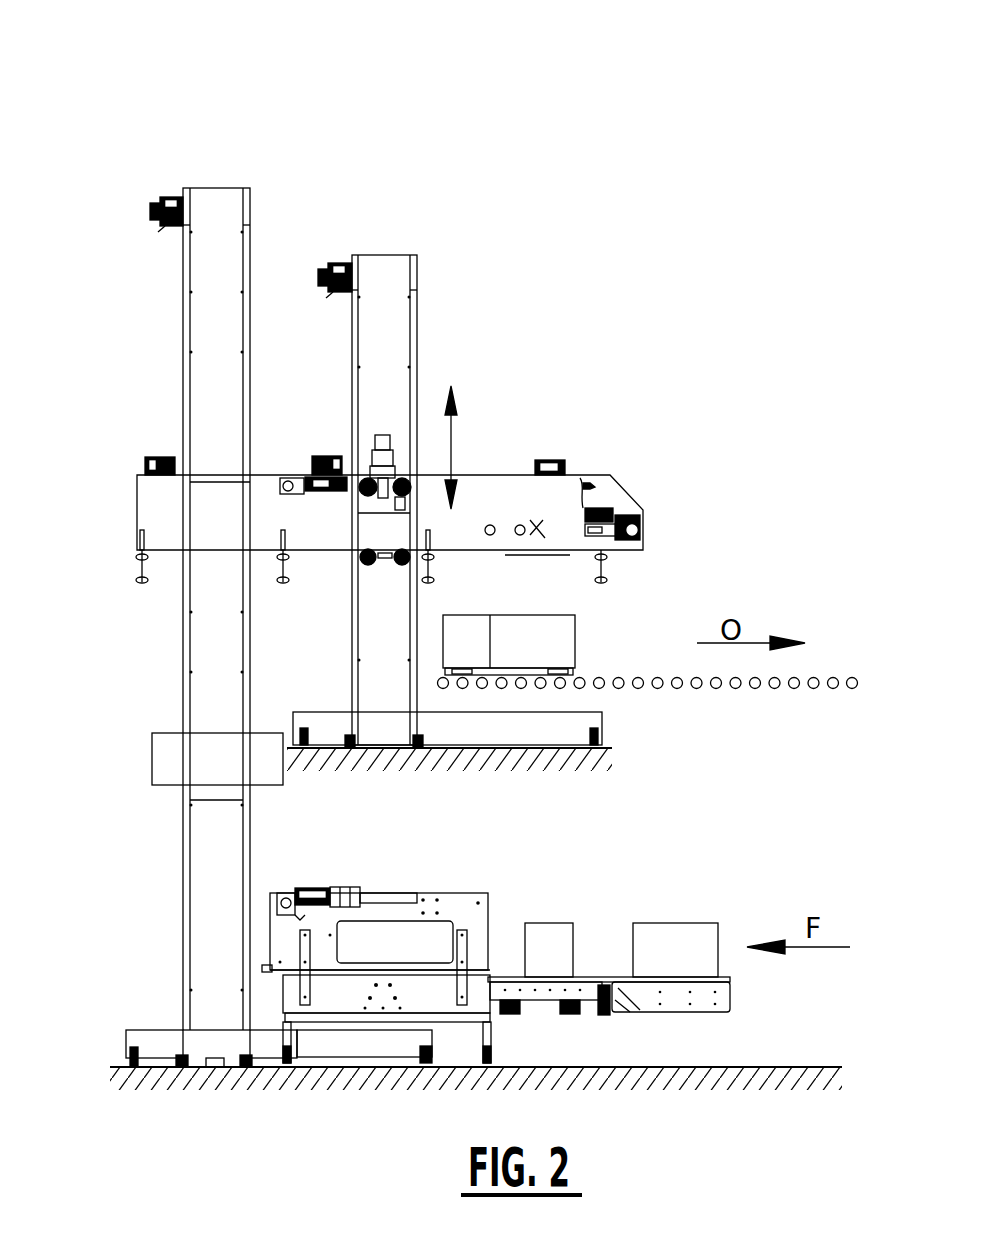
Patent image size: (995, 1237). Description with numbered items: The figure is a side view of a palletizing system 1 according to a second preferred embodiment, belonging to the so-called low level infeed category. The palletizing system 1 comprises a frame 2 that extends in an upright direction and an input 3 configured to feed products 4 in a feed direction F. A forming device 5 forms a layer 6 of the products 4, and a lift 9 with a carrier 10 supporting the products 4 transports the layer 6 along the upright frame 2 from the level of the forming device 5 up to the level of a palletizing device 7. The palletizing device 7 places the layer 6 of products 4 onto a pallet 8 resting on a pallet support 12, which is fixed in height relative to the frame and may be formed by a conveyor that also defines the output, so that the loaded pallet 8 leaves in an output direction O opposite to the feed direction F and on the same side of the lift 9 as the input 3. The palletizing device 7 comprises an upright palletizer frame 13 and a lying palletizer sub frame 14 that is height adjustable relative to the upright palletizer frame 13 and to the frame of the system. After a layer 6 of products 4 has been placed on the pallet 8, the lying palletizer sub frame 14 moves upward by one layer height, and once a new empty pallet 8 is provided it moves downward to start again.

The palletizing system 1 is at (776, 265).
The frame 2 is at (203, 170).
The input 3 is at (667, 997).
The products 4 is at (550, 937).
The forming device 5 is at (382, 873).
The layer 6 is at (137, 750).
The palletizing device 7 is at (473, 412).
The pallet 8 is at (570, 664).
The lift 9 is at (213, 628).
The carrier 10 is at (168, 795).
The pallet support 12 is at (493, 698).
The upright palletizer frame 13 is at (388, 332).
The lying palletizer sub frame 14 is at (482, 500).